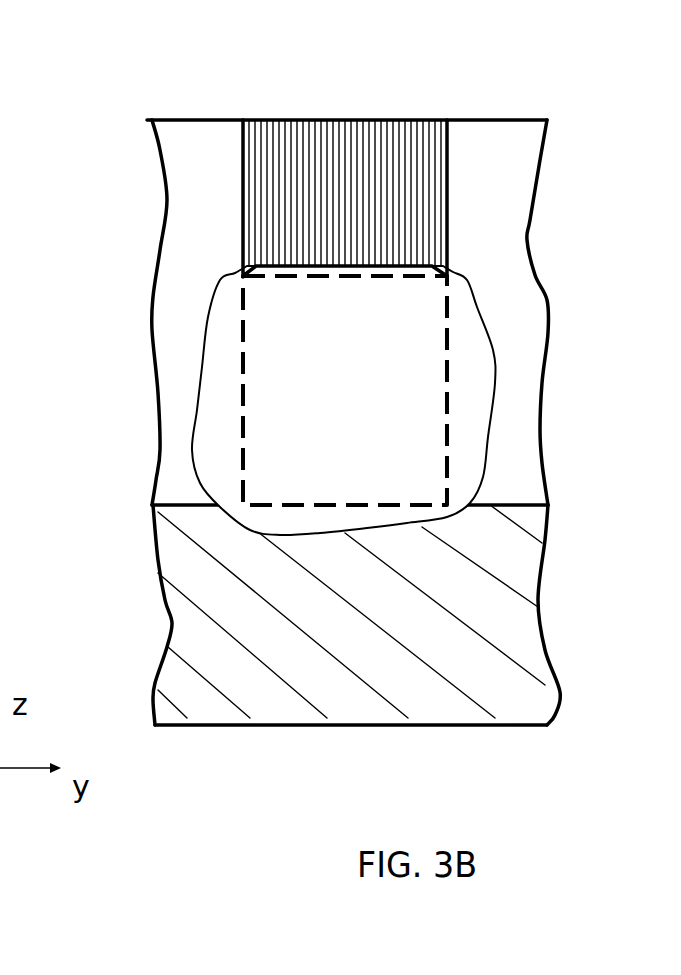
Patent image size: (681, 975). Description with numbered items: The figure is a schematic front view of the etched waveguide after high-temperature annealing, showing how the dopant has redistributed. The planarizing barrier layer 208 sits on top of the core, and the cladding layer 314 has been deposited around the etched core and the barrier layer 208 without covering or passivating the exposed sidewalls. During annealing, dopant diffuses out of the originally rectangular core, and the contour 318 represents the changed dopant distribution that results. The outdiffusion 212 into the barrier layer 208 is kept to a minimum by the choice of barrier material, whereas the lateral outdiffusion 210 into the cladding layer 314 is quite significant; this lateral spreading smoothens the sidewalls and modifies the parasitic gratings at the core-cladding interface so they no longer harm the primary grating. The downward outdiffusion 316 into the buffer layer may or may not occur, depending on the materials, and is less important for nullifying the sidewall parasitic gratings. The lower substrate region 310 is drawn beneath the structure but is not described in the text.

The barrier layer 208 is at (432, 160).
The lateral outdiffusion 210 is at (492, 417).
The outdiffusion into the barrier layer 212 is at (380, 265).
The substrate 310 is at (180, 688).
The cladding layer 314 is at (203, 193).
The outdiffusion into the buffer layer 316 is at (398, 530).
The contour 318 is at (218, 430).